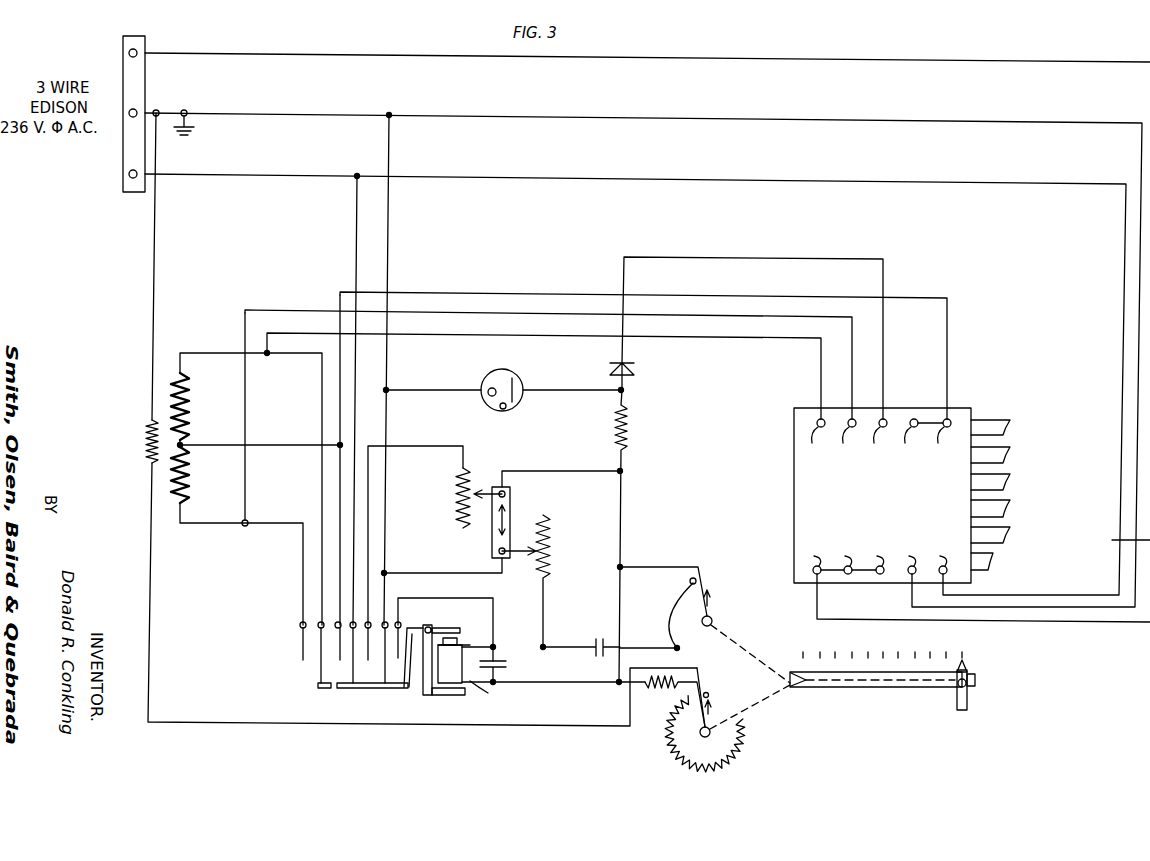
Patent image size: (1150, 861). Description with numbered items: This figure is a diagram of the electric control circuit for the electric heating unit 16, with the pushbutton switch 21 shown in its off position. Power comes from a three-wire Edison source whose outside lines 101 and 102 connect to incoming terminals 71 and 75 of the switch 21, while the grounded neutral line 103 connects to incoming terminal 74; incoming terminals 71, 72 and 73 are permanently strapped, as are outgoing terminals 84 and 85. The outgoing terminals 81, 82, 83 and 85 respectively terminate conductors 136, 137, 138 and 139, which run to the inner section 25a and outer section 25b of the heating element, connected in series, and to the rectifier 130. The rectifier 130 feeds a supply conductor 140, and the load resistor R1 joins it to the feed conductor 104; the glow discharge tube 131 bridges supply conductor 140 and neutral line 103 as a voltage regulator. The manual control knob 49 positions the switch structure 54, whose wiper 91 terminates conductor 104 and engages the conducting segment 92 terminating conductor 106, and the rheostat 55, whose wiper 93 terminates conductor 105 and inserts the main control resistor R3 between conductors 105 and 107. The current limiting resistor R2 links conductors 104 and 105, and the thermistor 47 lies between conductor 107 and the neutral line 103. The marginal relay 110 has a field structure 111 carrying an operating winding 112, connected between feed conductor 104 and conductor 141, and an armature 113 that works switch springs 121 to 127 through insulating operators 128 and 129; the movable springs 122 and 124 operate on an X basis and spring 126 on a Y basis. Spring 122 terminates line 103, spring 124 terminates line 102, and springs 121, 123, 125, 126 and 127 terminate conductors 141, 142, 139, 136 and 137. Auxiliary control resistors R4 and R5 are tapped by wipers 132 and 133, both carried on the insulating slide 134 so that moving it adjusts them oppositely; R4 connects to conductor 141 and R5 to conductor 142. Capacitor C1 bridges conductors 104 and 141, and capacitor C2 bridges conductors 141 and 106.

The outside line 101 is at (286, 54).
The outside line 102 is at (284, 175).
The grounded neutral line 103 is at (286, 114).
The feed conductor 104 is at (668, 563).
The conductor 105 is at (710, 690).
The conductor 106 is at (668, 645).
The conductor 107 is at (155, 606).
The electromagnetic relay 110 is at (411, 712).
The field structure 111 is at (448, 697).
The operating winding 112 is at (504, 670).
The armature 113 is at (442, 628).
The rear switch spring 121 is at (405, 630).
The movable switch spring 122 is at (392, 652).
The front switch spring 123 is at (392, 672).
The movable switch spring 124 is at (360, 652).
The front switch spring 125 is at (368, 672).
The movable switch spring 126 is at (337, 672).
The front switch spring 127 is at (300, 672).
The insulating operator 128 is at (368, 690).
The insulating operator 129 is at (325, 690).
The dry plate rectifier 130 is at (632, 373).
The gaseous discharge tube 131 is at (505, 361).
The wiper 132 is at (518, 564).
The wiper 133 is at (479, 484).
The insulating slide 134 is at (512, 499).
The conductor 136 is at (720, 334).
The conductor 137 is at (720, 314).
The conductor 138 is at (720, 259).
The conductor 139 is at (720, 295).
The supply conductor 140 is at (624, 390).
The conductor 141 is at (495, 647).
The conductor 142 is at (439, 444).
The electric heating unit 16 is at (176, 554).
The pushbutton switch 21 is at (888, 499).
The inner section of heating element 25a is at (190, 387).
The outer section of heating element 25b is at (190, 463).
The sensing resistor or thermistor 47 is at (148, 424).
The manual control knob 49 is at (966, 698).
The switch structure 54 is at (752, 586).
The rheostat 55 is at (784, 736).
The incoming terminal 71 is at (822, 556).
The incoming terminal 72 is at (853, 556).
The incoming terminal 73 is at (873, 556).
The incoming terminal 74 is at (905, 556).
The incoming terminal 75 is at (936, 556).
The outgoing terminal 81 is at (814, 439).
The outgoing terminal 82 is at (846, 439).
The outgoing terminal 83 is at (877, 439).
The outgoing terminal 84 is at (921, 439).
The outgoing terminal 85 is at (942, 439).
The wiper 91 is at (717, 602).
The conducting segment 92 is at (668, 617).
The wiper 93 is at (712, 710).
The load resistor R1 is at (627, 426).
The current limiting resistor R2 is at (666, 688).
The main control resistor R3 is at (667, 740).
The auxiliary control resistor R4 is at (550, 539).
The auxiliary control resistor R5 is at (454, 498).
The capacitor C1 is at (506, 664).
The capacitor C2 is at (593, 641).